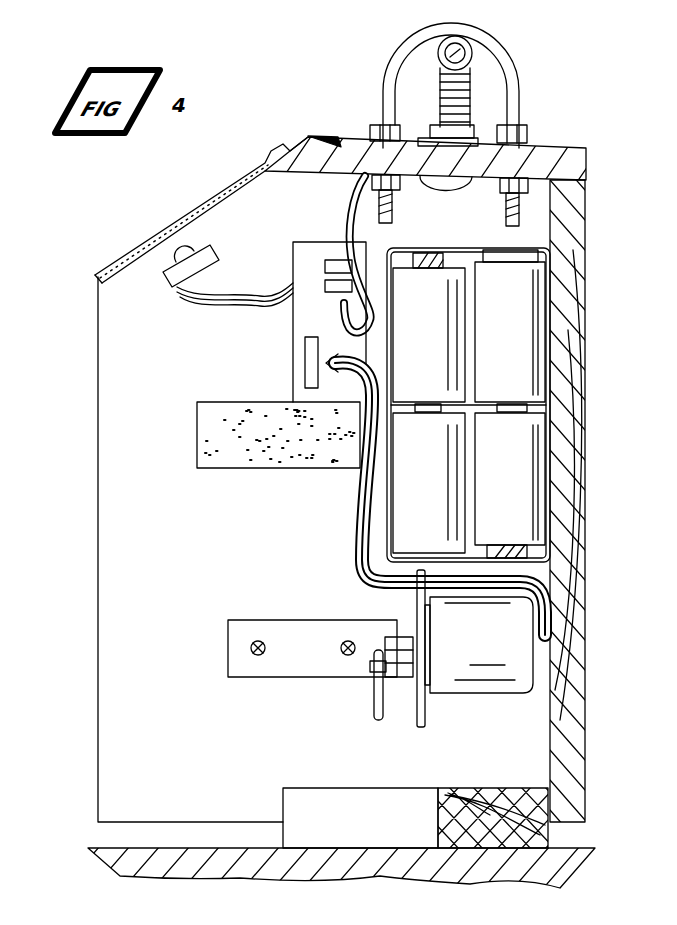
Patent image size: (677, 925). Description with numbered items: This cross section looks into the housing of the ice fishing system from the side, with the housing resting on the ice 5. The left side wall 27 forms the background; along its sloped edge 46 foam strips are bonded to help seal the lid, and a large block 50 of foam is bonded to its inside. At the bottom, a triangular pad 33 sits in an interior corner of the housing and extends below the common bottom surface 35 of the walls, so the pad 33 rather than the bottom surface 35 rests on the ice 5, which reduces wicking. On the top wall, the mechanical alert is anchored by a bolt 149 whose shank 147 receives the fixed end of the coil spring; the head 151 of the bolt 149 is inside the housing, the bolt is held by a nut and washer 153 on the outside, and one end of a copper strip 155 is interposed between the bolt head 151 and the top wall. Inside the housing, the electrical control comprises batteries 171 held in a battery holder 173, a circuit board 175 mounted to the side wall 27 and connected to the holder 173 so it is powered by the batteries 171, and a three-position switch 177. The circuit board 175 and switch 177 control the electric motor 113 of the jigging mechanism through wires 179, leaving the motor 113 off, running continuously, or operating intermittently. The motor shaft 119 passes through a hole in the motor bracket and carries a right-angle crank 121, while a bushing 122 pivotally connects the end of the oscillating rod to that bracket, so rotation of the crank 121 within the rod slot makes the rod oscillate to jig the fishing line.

The ice 5 is at (575, 860).
The left side wall 27 is at (98, 614).
The triangular shaped pads 33 is at (302, 800).
The common bottom surface 35 is at (570, 826).
The sloped edges 46 is at (127, 258).
The block of foam 50 is at (214, 408).
The electric motor 113 is at (458, 672).
The motor shaft 119 is at (392, 624).
The right-angle crank 121 is at (403, 682).
The bushing 122 is at (416, 640).
The shank 147 is at (455, 110).
The bolt 149 is at (478, 82).
The head 151 is at (432, 185).
The nut and washer 153 is at (478, 130).
The copper strip 155 is at (436, 183).
The batteries 171 is at (512, 300).
The holder 173 is at (545, 250).
The circuit board 175 is at (294, 326).
The three-position switch 177 is at (212, 245).
The wires 179 is at (362, 500).